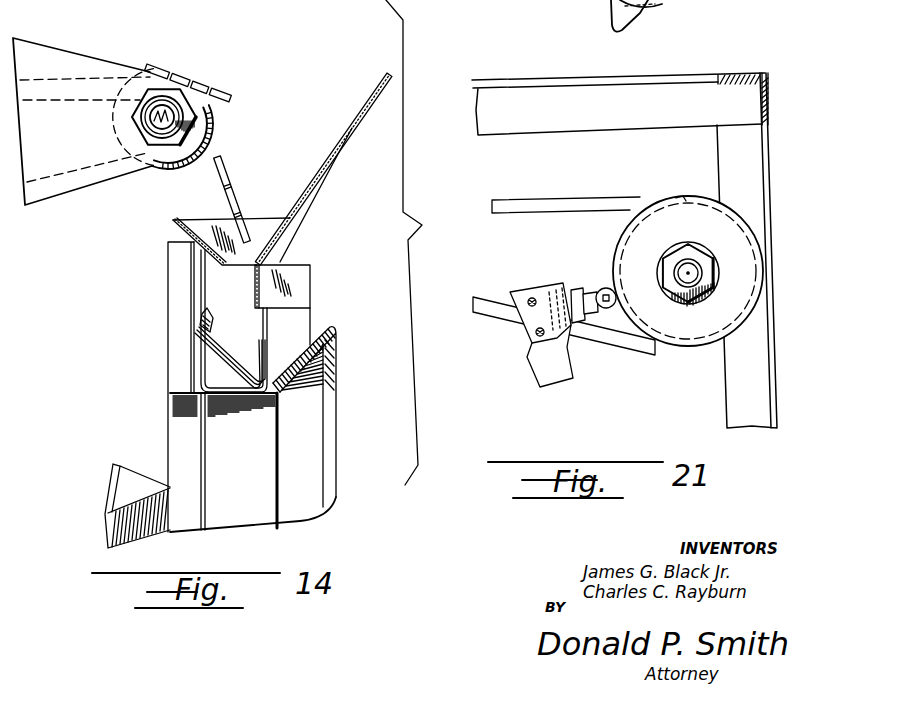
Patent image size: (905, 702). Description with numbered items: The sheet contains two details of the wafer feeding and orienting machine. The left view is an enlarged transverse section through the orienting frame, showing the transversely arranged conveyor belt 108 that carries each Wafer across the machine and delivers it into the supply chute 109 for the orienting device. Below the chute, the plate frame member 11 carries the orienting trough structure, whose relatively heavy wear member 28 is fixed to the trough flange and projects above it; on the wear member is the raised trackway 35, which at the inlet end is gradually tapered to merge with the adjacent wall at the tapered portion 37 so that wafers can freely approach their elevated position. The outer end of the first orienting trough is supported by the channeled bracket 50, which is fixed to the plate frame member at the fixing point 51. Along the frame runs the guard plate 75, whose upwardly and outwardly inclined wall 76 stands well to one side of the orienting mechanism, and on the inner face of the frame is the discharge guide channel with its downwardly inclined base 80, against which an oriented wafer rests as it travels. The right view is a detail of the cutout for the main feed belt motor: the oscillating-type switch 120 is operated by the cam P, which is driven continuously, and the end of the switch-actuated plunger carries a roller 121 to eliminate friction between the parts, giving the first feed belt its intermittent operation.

In FIG. 14, the transversely arranged conveyor belt 108 is at (67, 78).
In FIG. 21, the transversely arranged conveyor belt 108 is at (565, 207).
In FIG. 14, the wafer Wafer is at (225, 158).
In FIG. 14, the supply chute 109 is at (317, 183).
In FIG. 14, the plate frame member 11 is at (177, 279).
In FIG. 14, the wear member 28 is at (199, 287).
In FIG. 14, the fixing point of channeled bracket 51 is at (193, 307).
In FIG. 14, the tapered portion of trackway 37 is at (200, 320).
In FIG. 14, the raised trackway 35 is at (213, 322).
In FIG. 14, the channeled bracket 50 is at (249, 350).
In FIG. 14, the downwardly inclined base 80 is at (147, 497).
In FIG. 14, the upwardly and outwardly inclined wall 76 is at (314, 465).
In FIG. 14, the guard plate 75 is at (252, 516).
In FIG. 21, the cam P is at (628, 232).
In FIG. 21, the switch 120 is at (575, 290).
In FIG. 21, the roller 121 is at (606, 285).